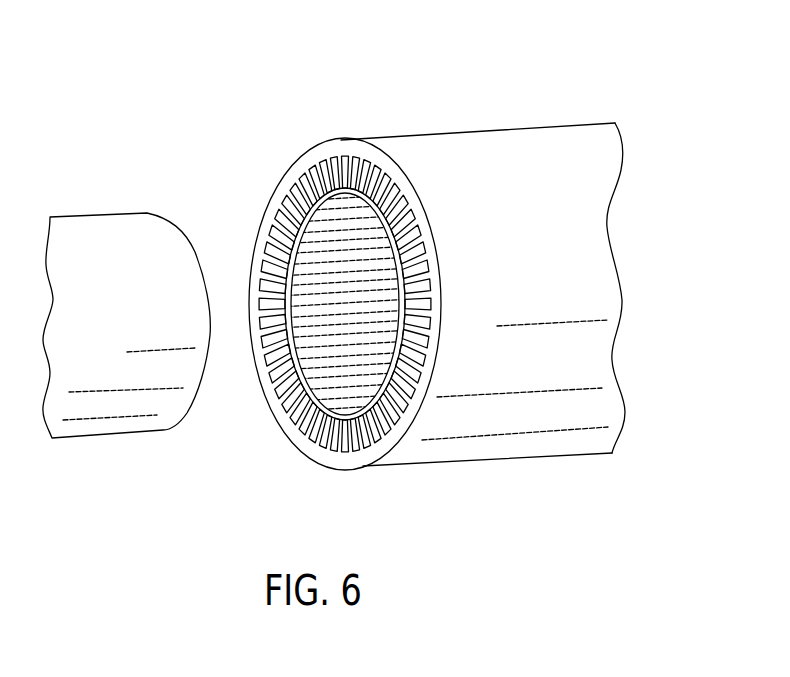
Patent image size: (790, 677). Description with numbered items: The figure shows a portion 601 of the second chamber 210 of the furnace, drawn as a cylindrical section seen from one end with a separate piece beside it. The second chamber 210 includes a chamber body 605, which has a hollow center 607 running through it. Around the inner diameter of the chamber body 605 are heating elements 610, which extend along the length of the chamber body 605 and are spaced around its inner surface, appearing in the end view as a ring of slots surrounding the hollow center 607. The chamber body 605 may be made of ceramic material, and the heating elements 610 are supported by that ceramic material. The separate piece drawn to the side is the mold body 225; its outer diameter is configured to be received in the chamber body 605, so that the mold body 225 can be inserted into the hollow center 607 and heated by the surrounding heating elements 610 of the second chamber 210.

The second chamber 210 is at (538, 256).
The mold body 225 is at (138, 313).
The portion 601 is at (587, 280).
The chamber body 605 is at (585, 202).
The hollow center 607 is at (309, 343).
The heating elements 610 is at (345, 415).